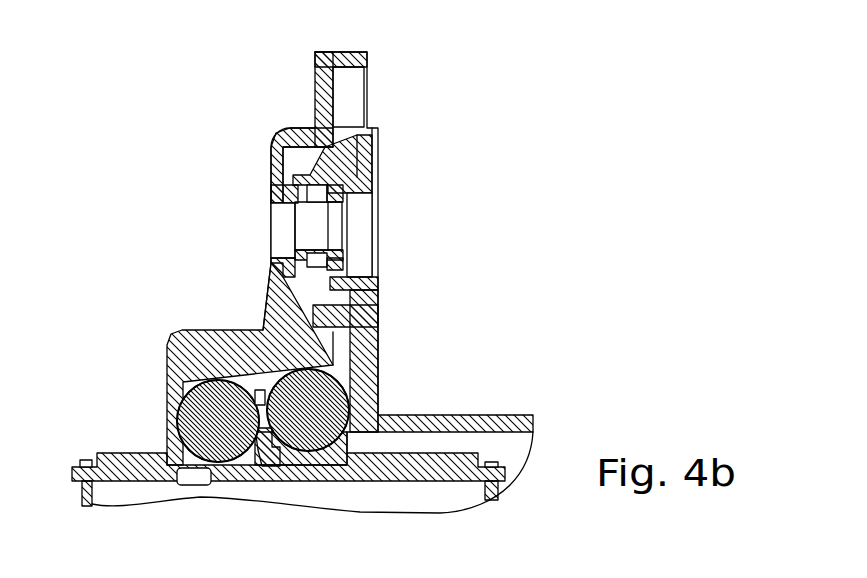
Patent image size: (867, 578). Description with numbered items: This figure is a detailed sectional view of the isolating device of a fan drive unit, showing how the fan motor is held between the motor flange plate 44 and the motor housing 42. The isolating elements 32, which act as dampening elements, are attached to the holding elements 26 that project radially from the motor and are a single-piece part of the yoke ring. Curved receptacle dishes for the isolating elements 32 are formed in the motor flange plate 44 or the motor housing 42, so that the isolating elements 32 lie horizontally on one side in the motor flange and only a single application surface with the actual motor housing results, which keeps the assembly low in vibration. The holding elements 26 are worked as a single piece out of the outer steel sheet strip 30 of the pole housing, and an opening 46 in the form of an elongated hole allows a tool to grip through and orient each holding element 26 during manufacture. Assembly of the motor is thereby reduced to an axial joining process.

The holding element 26 is at (262, 443).
The steel sheet strip 30 is at (127, 452).
The isolating element 32 is at (300, 372).
The motor housing 42 is at (453, 417).
The motor flange plate 44 is at (192, 347).
The opening 46 is at (195, 481).